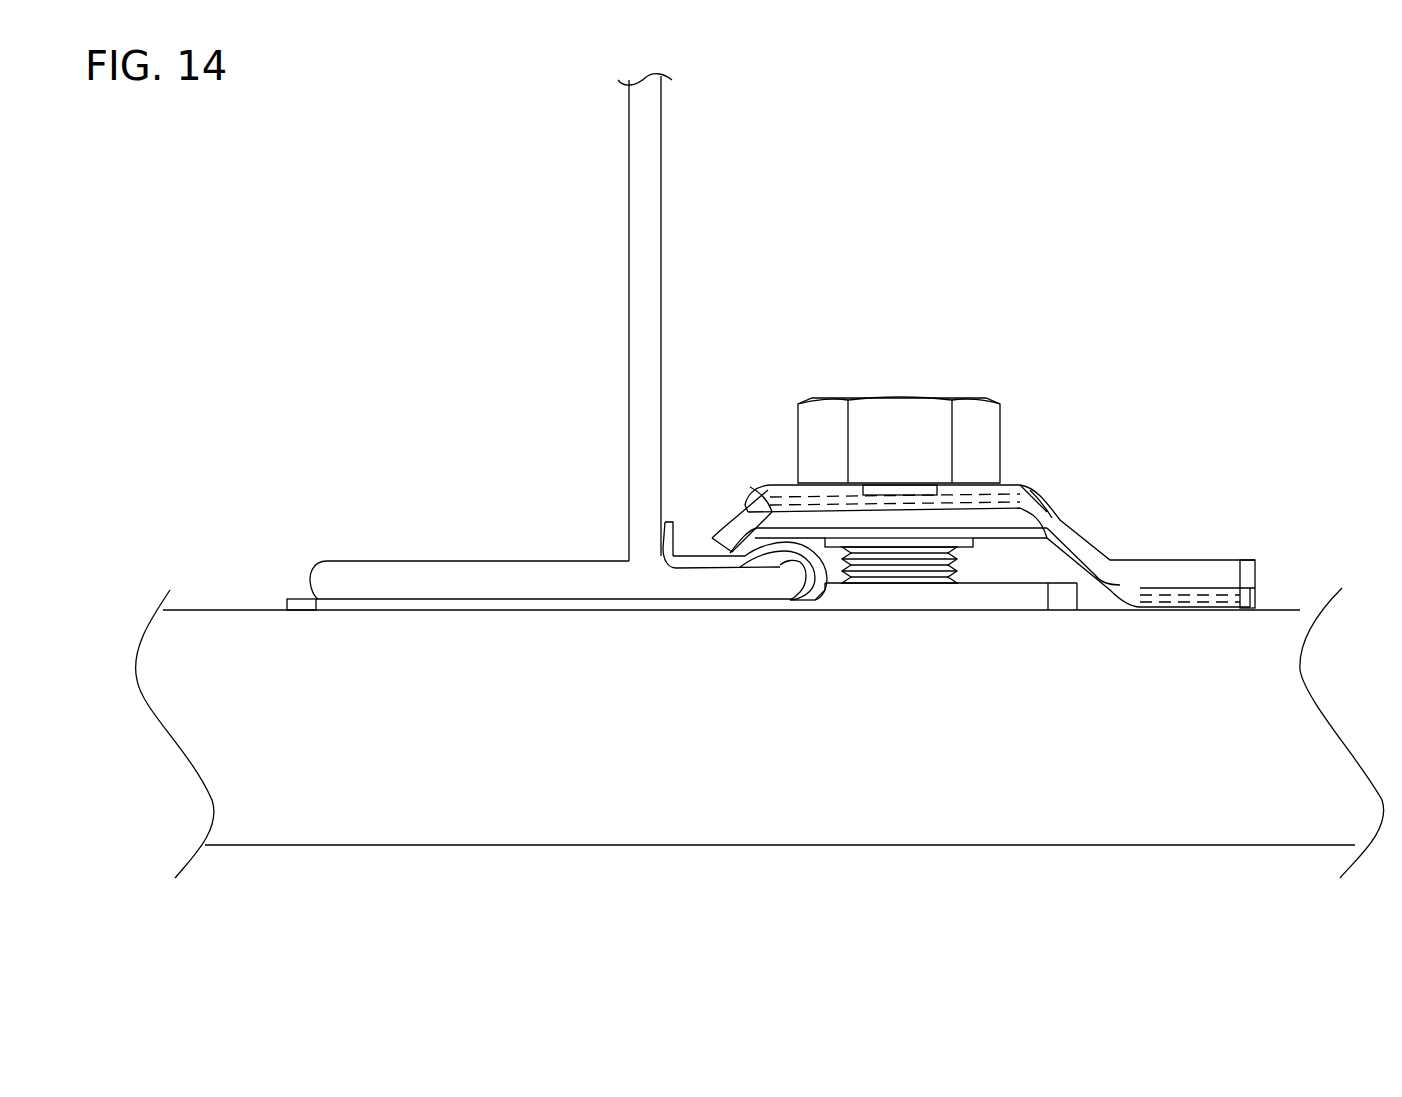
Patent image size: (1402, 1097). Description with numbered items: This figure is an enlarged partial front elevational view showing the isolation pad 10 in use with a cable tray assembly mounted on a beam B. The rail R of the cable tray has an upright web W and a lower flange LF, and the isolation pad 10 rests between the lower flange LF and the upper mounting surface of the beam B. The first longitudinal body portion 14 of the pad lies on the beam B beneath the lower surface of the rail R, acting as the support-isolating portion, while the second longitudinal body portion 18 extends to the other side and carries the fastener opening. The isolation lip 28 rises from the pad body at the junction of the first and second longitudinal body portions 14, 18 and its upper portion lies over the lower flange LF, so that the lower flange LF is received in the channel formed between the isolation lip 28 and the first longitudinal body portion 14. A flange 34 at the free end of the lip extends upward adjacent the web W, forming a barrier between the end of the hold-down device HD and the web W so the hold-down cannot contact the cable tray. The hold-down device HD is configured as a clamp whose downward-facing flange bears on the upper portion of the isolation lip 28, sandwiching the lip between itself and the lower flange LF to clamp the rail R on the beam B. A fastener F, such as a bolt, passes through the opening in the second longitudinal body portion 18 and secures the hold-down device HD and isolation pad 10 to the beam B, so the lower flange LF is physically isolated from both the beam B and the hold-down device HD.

The isolation pad 10 is at (797, 612).
The first longitudinal body portion 14 is at (498, 602).
The second longitudinal body portion 18 is at (950, 605).
The isolation lip 28 is at (739, 560).
The flange 34 is at (690, 572).
The beam B is at (1298, 607).
The rail R is at (555, 336).
The web W is at (661, 218).
The lower flange LF is at (420, 565).
The hold-down device HD is at (1087, 540).
The fastener F is at (940, 398).